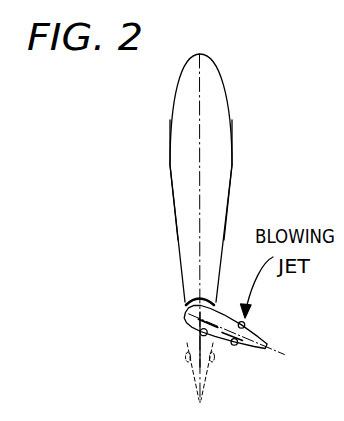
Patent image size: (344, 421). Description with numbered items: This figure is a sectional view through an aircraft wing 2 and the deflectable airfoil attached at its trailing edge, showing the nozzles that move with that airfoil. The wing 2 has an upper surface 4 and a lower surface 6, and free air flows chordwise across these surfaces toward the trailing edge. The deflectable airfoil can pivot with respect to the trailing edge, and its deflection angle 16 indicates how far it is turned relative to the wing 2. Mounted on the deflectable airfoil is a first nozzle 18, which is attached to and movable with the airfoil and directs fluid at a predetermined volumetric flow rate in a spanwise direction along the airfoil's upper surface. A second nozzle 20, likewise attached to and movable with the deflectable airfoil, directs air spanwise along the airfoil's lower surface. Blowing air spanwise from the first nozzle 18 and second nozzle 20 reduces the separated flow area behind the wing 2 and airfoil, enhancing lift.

The wing 2 is at (222, 71).
The upper surface 4 is at (170, 162).
The lower surface 6 is at (232, 162).
The deflection angle 16 is at (197, 334).
The first nozzle 18 is at (247, 322).
The second nozzle 20 is at (236, 348).